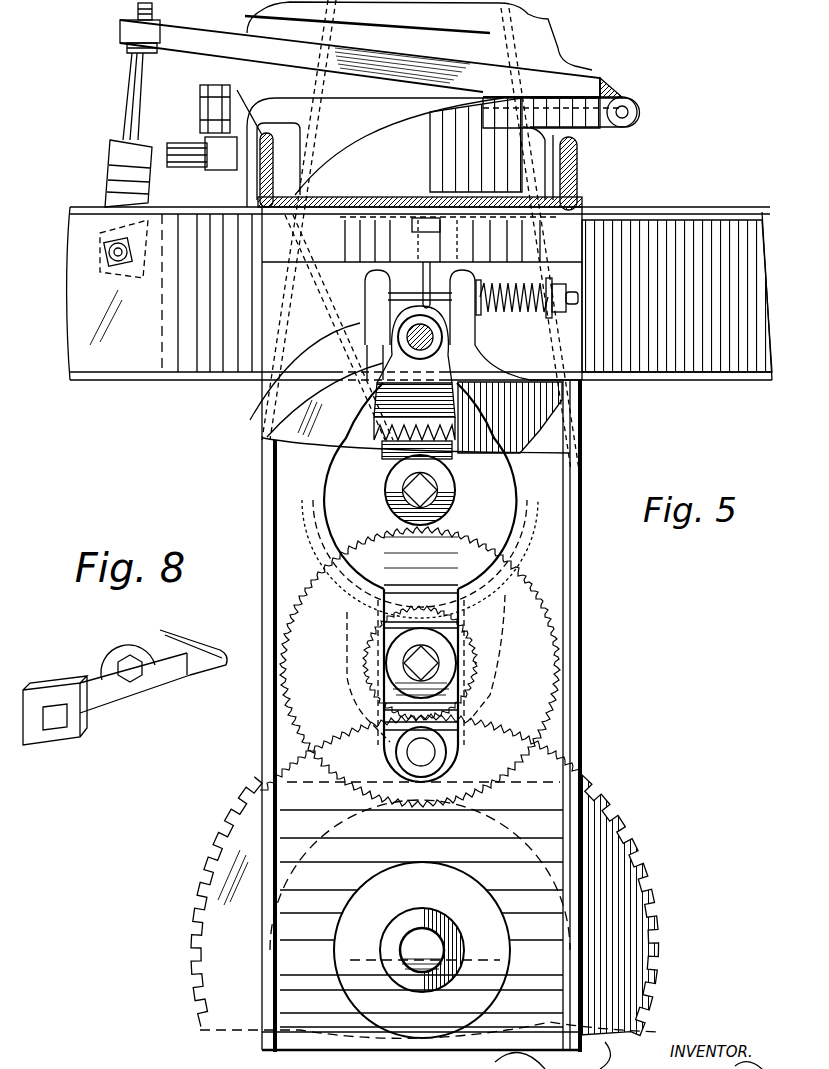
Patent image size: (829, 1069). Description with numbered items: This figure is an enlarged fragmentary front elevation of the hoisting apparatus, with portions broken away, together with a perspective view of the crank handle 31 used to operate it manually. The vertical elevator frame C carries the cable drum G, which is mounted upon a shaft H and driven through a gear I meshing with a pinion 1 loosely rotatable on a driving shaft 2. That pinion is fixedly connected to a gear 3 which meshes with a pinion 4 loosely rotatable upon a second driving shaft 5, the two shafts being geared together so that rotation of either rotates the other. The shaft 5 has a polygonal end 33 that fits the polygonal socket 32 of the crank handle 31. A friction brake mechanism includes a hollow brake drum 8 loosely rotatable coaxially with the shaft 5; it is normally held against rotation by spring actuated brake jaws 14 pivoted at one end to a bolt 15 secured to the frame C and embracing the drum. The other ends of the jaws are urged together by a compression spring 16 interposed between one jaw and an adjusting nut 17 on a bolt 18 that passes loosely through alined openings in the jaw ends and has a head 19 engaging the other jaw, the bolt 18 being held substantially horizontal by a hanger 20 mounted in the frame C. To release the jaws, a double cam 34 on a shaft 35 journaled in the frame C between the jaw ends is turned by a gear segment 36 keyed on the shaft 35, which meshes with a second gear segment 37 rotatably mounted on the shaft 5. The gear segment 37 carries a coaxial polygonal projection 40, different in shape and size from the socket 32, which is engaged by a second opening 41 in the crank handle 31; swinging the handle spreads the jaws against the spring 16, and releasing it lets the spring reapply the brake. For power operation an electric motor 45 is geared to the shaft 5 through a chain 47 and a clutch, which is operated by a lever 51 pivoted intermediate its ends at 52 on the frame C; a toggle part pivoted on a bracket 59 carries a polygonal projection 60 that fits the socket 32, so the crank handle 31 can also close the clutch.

In FIG. 5, the chain 47 is at (405, 30).
In FIG. 5, the electric motor 45 is at (489, 24).
In FIG. 5, the polygonal projection 60 is at (185, 144).
In FIG. 5, the bracket 59 is at (222, 170).
In FIG. 5, the lever 51 is at (227, 220).
In FIG. 5, the pivot 52 is at (268, 337).
In FIG. 5, the hanger 20 is at (570, 190).
In FIG. 5, the compression spring 16 is at (512, 282).
In FIG. 5, the adjusting nut 17 is at (556, 296).
In FIG. 5, the bolt 18 is at (584, 320).
In FIG. 5, the double cam 34 is at (446, 352).
In FIG. 5, the shaft 35 is at (340, 428).
In FIG. 5, the head 19 is at (372, 305).
In FIG. 5, the brake drum 8 is at (380, 345).
In FIG. 5, the polygonal projection 40 is at (453, 510).
In FIG. 5, the gear segment 36 is at (345, 455).
In FIG. 5, the gear segment 37 is at (500, 460).
In FIG. 5, the pinion 4 is at (397, 517).
In FIG. 5, the polygonal end 33 is at (403, 484).
In FIG. 5, the second driving shaft 5 is at (412, 486).
In FIG. 5, the gear 3 is at (420, 667).
In FIG. 5, the brake jaws 14 is at (258, 562).
In FIG. 5, the pinion 1 is at (365, 653).
In FIG. 5, the driving shaft 2 is at (398, 668).
In FIG. 5, the bolt 15 is at (396, 752).
In FIG. 5, the elevator frame C is at (262, 725).
In FIG. 5, the gear I is at (228, 800).
In FIG. 5, the cable drum G is at (342, 832).
In FIG. 5, the shaft H is at (418, 948).
In FIG. 8, the polygonal socket 32 is at (62, 732).
In FIG. 8, the crank handle 31 is at (178, 690).
In FIG. 8, the second opening 41 is at (105, 656).